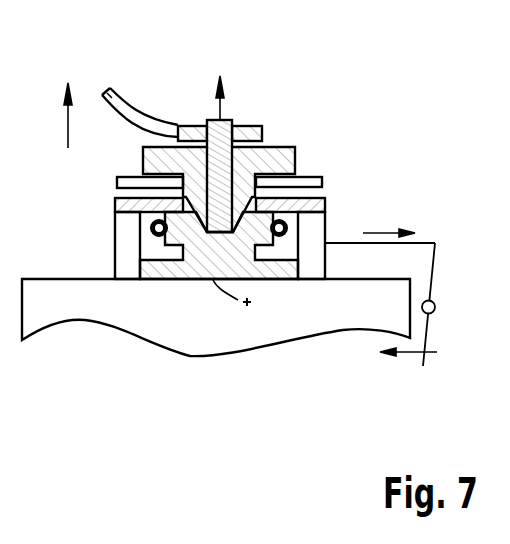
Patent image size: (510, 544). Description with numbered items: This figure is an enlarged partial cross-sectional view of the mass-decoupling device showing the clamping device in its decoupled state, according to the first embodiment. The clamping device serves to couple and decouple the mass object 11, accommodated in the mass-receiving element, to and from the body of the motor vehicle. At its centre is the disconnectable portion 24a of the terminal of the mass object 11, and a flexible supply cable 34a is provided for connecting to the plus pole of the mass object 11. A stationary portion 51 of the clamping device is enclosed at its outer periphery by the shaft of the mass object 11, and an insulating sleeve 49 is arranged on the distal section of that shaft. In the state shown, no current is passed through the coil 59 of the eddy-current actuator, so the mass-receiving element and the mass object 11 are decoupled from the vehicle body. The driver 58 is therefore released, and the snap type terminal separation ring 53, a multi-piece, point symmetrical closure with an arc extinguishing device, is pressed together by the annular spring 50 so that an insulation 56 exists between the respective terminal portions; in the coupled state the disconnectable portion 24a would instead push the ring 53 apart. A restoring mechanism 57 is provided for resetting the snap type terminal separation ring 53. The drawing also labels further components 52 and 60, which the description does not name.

The mass object 11 is at (404, 279).
The disconnectable portion of the terminal 24a is at (233, 165).
The flexible supply cable 34a is at (102, 93).
The insulating sleeve 49 is at (327, 258).
The annular spring 50 is at (288, 227).
The stationary portion 51 is at (283, 280).
The collar 52 is at (192, 126).
The snap type terminal separation ring 53 is at (260, 225).
The insulation 56 is at (219, 250).
The restoring mechanism 57 is at (423, 367).
The driver 58 is at (289, 146).
The coil 59 is at (114, 203).
The left guide plate 60 is at (116, 181).